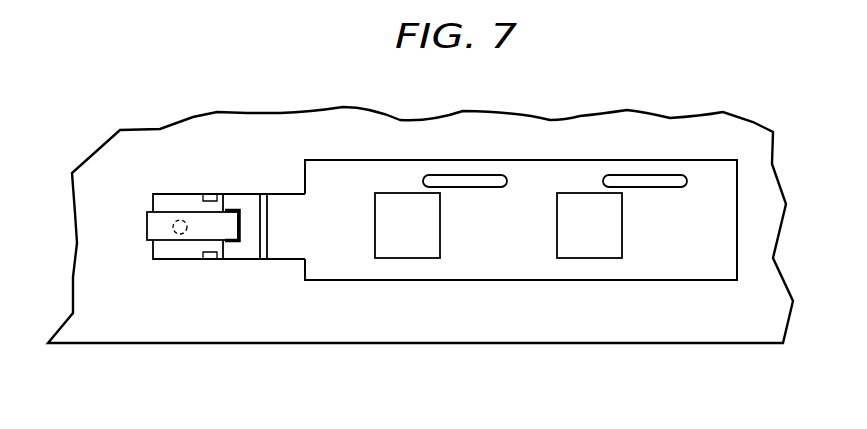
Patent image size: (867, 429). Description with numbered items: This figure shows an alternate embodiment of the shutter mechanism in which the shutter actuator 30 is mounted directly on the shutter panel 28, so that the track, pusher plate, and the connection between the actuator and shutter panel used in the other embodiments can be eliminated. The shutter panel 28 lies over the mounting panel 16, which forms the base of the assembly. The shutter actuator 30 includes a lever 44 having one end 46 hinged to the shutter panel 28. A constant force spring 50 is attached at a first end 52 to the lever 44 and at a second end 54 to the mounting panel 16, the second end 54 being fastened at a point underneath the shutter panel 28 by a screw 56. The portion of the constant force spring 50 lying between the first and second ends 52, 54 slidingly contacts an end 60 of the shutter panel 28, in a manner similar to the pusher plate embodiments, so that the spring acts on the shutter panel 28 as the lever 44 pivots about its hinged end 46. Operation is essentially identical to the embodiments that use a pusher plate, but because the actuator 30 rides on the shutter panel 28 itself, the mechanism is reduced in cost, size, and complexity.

The mounting panel 16 is at (600, 343).
The shutter panel 28 is at (507, 250).
The shutter actuator 30 is at (258, 172).
The lever 44 is at (248, 262).
The end of lever 46 is at (208, 262).
The constant force spring 50 is at (147, 228).
The first end of constant force spring 52 is at (240, 209).
The second end of constant force spring 54 is at (137, 235).
The screw 56 is at (181, 212).
The end of shutter panel 60 is at (153, 197).